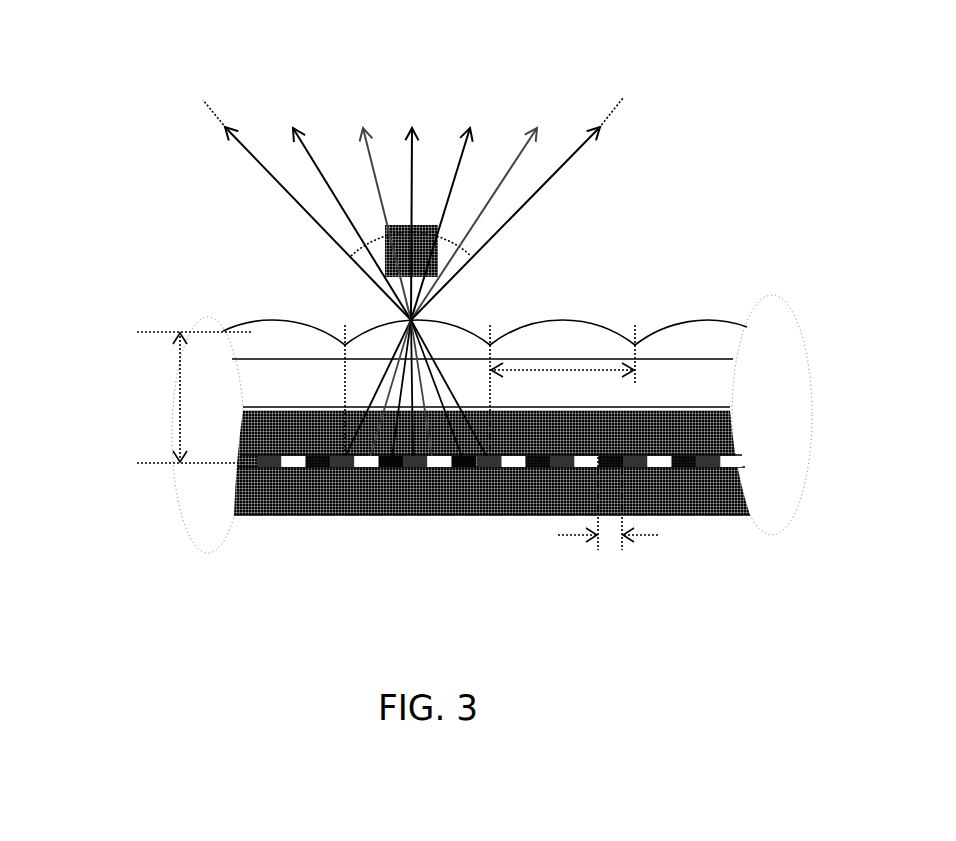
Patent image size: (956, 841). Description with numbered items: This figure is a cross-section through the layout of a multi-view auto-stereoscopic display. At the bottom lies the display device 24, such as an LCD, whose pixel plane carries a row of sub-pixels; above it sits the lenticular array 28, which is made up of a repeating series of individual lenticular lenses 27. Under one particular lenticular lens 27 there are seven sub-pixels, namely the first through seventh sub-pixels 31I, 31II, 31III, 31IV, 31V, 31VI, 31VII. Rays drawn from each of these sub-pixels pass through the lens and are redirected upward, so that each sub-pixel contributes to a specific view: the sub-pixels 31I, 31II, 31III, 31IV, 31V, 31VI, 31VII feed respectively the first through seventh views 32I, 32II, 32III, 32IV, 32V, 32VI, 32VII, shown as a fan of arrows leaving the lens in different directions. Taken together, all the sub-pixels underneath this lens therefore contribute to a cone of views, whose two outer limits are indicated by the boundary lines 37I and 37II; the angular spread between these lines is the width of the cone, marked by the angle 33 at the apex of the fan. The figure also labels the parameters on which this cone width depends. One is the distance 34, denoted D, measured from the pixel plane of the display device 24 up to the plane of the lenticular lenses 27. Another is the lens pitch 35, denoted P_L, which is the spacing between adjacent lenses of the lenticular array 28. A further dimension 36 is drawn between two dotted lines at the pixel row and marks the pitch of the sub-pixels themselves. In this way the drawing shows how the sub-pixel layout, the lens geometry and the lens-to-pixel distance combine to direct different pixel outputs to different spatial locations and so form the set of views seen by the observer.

The display device 24 is at (793, 402).
The lenticular lens 27 is at (381, 326).
The lenticular array 28 is at (793, 308).
The first sub-pixel 31I is at (332, 466).
The second sub-pixel 31II is at (352, 468).
The third sub-pixel 31III is at (382, 468).
The fourth sub-pixel 31IV is at (409, 468).
The fifth sub-pixel 31V is at (444, 468).
The sixth sub-pixel 31VI is at (468, 468).
The seventh sub-pixel 31VII is at (503, 468).
The first view 32I is at (532, 176).
The second view 32II is at (499, 176).
The third view 32III is at (461, 176).
The fourth view 32IV is at (419, 176).
The fifth view 32V is at (368, 176).
The sixth view 32VI is at (325, 176).
The seventh view 32VII is at (280, 176).
The viewing angle 33 is at (445, 230).
The distance 34 is at (180, 381).
The lens pitch 35 is at (562, 368).
The pixel pitch 36 is at (598, 542).
The first cone boundary line 37I is at (218, 115).
The second cone boundary line 37II is at (615, 117).